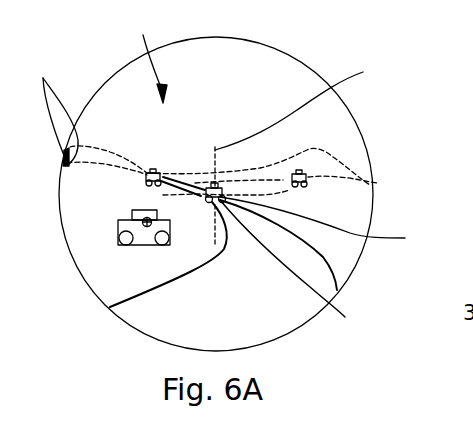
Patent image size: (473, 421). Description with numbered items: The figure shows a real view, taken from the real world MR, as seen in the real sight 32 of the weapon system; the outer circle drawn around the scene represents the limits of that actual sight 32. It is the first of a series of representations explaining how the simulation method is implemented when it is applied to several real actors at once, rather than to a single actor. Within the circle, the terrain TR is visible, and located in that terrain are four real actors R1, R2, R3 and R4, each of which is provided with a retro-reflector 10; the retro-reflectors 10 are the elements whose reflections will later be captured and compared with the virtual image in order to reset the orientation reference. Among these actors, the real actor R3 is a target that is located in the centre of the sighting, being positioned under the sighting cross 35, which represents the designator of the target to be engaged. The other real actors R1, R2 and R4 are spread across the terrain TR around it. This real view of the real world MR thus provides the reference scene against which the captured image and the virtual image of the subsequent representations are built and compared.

The retro-reflector 10 is at (152, 185).
The real sight 32 is at (355, 118).
The sighting cross 35 is at (304, 105).
The real world MR is at (146, 58).
The terrain TR is at (88, 113).
The real actor R1 is at (117, 225).
The real actor R2 is at (147, 178).
The real actor R3 is at (326, 224).
The real actor R4 is at (303, 175).